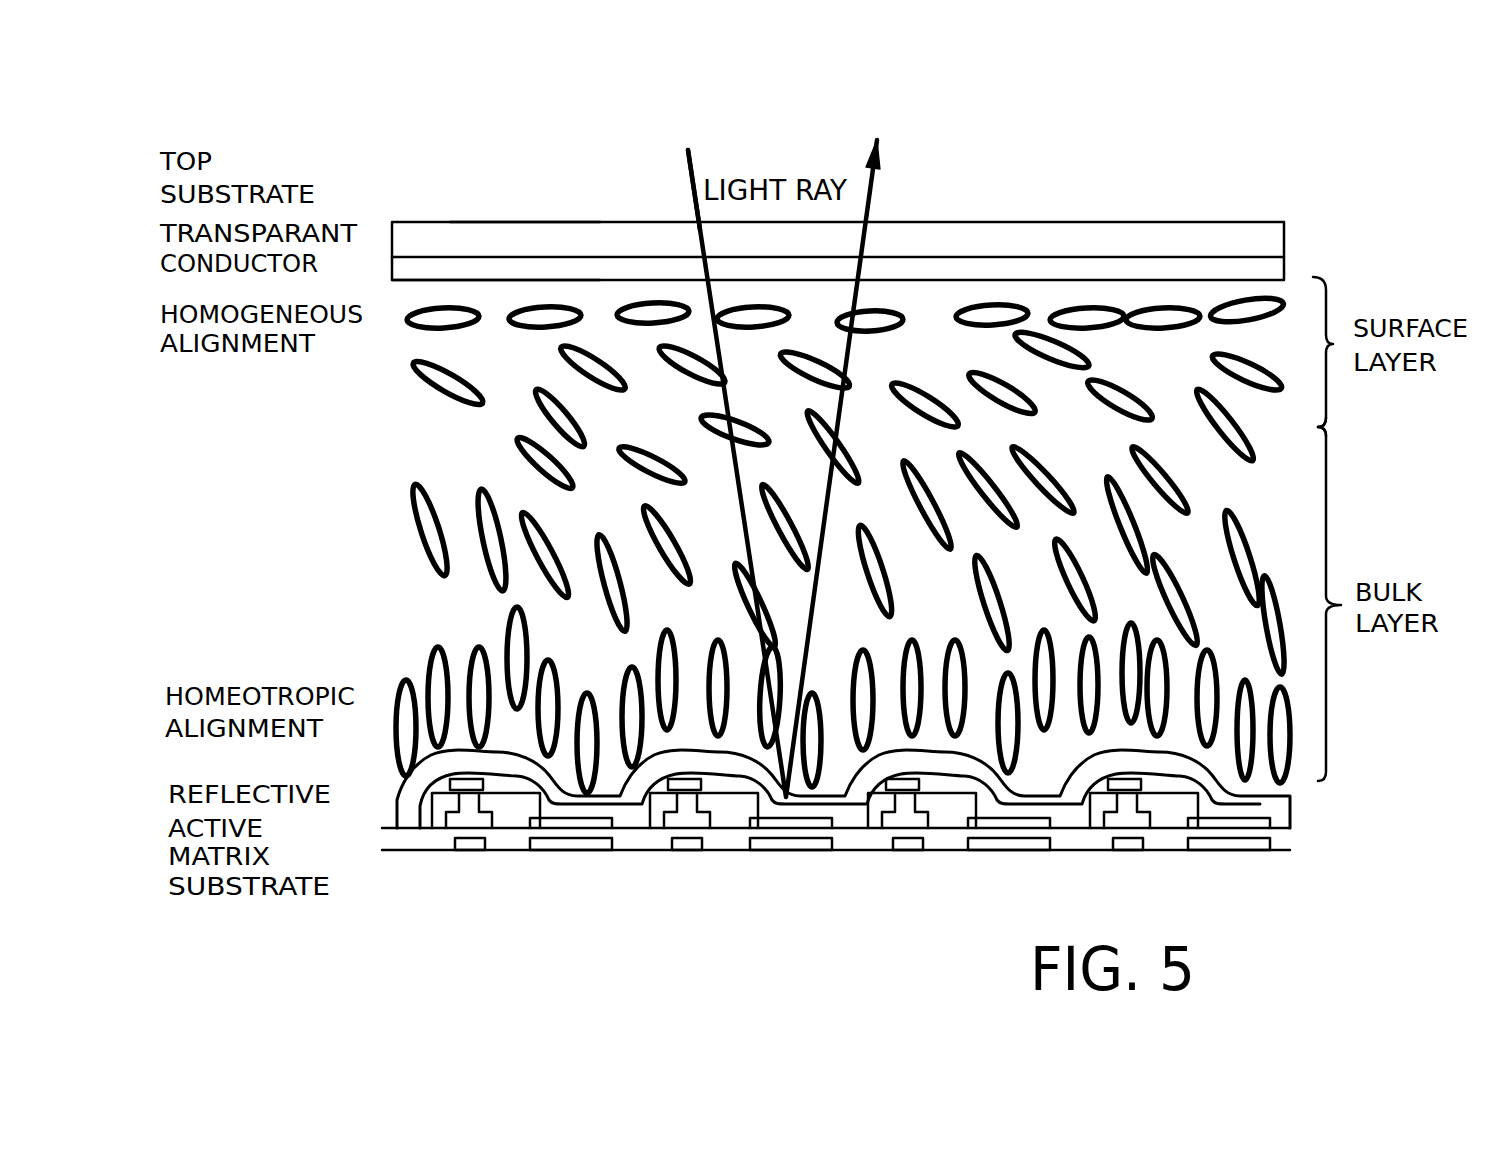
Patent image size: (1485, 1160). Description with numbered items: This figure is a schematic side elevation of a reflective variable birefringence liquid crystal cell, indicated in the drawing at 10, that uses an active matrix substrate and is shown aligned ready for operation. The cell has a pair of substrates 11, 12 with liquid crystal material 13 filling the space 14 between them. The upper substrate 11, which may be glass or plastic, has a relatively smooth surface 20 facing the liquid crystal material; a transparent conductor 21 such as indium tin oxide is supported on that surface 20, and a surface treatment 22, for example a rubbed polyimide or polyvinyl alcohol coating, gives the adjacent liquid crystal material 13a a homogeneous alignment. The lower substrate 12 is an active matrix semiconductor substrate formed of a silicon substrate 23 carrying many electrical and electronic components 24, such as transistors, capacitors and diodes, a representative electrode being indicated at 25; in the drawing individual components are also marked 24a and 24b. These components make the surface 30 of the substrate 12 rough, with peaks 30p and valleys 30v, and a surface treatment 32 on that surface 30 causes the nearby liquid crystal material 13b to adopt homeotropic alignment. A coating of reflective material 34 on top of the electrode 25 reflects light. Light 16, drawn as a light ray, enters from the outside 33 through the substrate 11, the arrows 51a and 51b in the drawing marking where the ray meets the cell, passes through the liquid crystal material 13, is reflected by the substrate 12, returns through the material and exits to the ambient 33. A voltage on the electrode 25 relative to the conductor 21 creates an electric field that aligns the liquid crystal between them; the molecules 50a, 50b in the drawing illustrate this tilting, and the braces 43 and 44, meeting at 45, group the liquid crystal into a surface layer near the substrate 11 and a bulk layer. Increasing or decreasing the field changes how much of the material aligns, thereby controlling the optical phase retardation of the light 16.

The liquid crystal display 10 is at (808, 223).
The substrate 11 is at (413, 240).
The surface 20 is at (430, 265).
The transparent conductor 21 is at (467, 272).
The surface treatment 22 is at (527, 285).
The incident light entry point 51a is at (506, 222).
The incident light direction 51b is at (713, 163).
The light 16 is at (690, 193).
The outside 33 is at (913, 247).
The surface layer 43 is at (1290, 327).
The bulk layer 44 is at (1332, 500).
The boundary between surface and bulk layers 45 is at (1336, 426).
The liquid crystal material proximate substrate 11 13a is at (425, 397).
The liquid crystal material 13 is at (383, 467).
The space 14 is at (408, 472).
The liquid crystal molecule tilt region 50a is at (437, 585).
The liquid crystal molecule tilt region 50b is at (640, 502).
The liquid crystal material proximate substrate 12 13b is at (386, 682).
The peaks 30p is at (527, 733).
The valleys 30v is at (602, 787).
The coating of reflective material 34 is at (690, 727).
The surface treatment 32 is at (415, 793).
The surface 30 is at (815, 842).
The electrode 25 is at (500, 790).
The substrate 12 is at (819, 895).
The silicon substrate 23 is at (653, 840).
The electrical and/or electronic components 24 is at (515, 875).
The electrode 24a is at (430, 883).
The electrode 24b is at (722, 858).